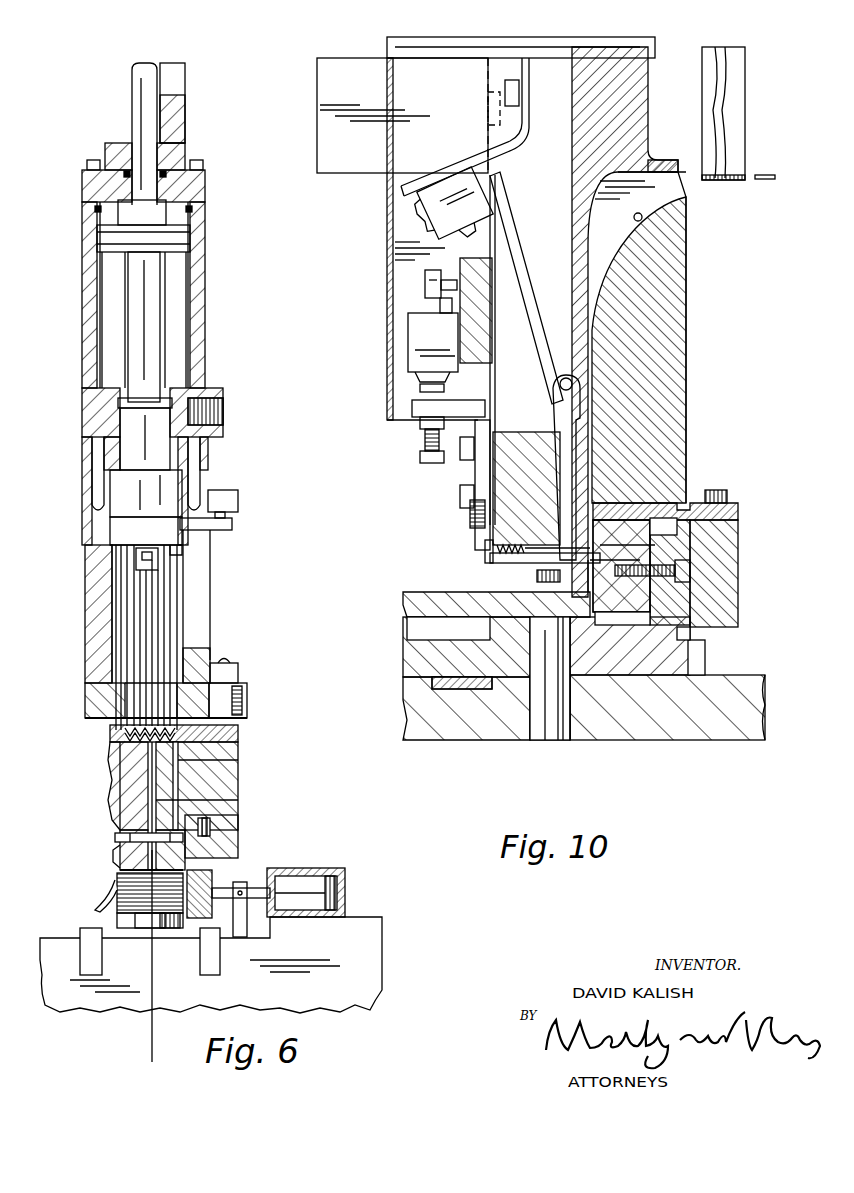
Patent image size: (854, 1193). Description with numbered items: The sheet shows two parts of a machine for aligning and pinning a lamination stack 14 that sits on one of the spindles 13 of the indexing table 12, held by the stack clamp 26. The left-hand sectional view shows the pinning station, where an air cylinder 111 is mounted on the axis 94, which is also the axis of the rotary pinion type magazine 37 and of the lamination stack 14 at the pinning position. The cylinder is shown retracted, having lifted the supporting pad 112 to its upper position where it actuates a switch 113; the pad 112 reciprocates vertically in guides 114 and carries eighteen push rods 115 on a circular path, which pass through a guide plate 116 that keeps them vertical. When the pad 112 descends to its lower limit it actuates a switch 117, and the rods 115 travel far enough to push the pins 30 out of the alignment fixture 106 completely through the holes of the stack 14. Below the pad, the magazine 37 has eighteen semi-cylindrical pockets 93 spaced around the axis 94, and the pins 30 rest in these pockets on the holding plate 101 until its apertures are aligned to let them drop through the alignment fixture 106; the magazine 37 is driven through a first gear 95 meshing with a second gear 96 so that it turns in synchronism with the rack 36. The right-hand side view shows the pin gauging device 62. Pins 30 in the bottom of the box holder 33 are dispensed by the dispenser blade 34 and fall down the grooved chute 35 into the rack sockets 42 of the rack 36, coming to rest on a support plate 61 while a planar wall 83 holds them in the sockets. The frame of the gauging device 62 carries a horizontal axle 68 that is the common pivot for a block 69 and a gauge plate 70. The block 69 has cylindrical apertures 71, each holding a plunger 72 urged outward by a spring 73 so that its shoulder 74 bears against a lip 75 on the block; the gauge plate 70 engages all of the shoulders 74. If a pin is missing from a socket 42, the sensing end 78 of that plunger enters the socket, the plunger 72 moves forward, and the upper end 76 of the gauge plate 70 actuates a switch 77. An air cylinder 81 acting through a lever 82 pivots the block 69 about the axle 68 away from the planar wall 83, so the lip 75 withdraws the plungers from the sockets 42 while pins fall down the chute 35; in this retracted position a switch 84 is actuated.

In FIG. 6, the air cylinder 111 is at (200, 330).
In FIG. 6, the supporting pad 112 is at (120, 528).
In FIG. 6, the switch 113 is at (238, 498).
In FIG. 6, the guides 114 is at (95, 613).
In FIG. 6, the push rods 115 is at (135, 638).
In FIG. 6, the guide plate 116 is at (95, 697).
In FIG. 6, the switch 117 is at (238, 671).
In FIG. 6, the semi-cylindrical pockets 93 is at (247, 718).
In FIG. 6, the rotary pinion type magazine 37 is at (200, 762).
In FIG. 6, the first gear 95 is at (207, 828).
In FIG. 6, the holding plate 101 is at (112, 838).
In FIG. 6, the alignment fixture 106 is at (112, 856).
In FIG. 6, the spindles 13 is at (120, 872).
In FIG. 6, the lamination stack 14 is at (115, 906).
In FIG. 6, the indexing table 12 is at (52, 950).
In FIG. 6, the stack clamp 26 is at (222, 890).
In FIG. 6, the axis 94 is at (150, 1042).
In FIG. 10, the air cylinder 81 is at (341, 172).
In FIG. 10, the gauging device 62 is at (386, 262).
In FIG. 10, the upper end 76 is at (505, 200).
In FIG. 10, the switch 77 is at (475, 222).
In FIG. 10, the lever 82 is at (528, 236).
In FIG. 10, the chute 35 is at (645, 222).
In FIG. 10, the box holder 33 is at (710, 105).
In FIG. 10, the pins 30 is at (713, 180).
In FIG. 10, the dispenser blade 34 is at (765, 180).
In FIG. 10, the switch 84 is at (408, 340).
In FIG. 10, the horizontal axle 68 is at (561, 382).
In FIG. 10, the gauge plate 70 is at (560, 412).
In FIG. 10, the block 69 is at (495, 525).
In FIG. 10, the spring 73 is at (497, 548).
In FIG. 10, the plunger 72 is at (545, 562).
In FIG. 10, the cylindrical apertures 71 is at (500, 563).
In FIG. 10, the shoulder 74 is at (539, 575).
In FIG. 10, the support plate 61 is at (405, 618).
In FIG. 10, the planar wall 83 is at (492, 626).
In FIG. 10, the second gear 96 is at (698, 660).
In FIG. 10, the rack sockets 42 is at (690, 510).
In FIG. 10, the sensing end 78 is at (640, 560).
In FIG. 10, the lip 75 is at (655, 545).
In FIG. 10, the rack 36 is at (692, 568).